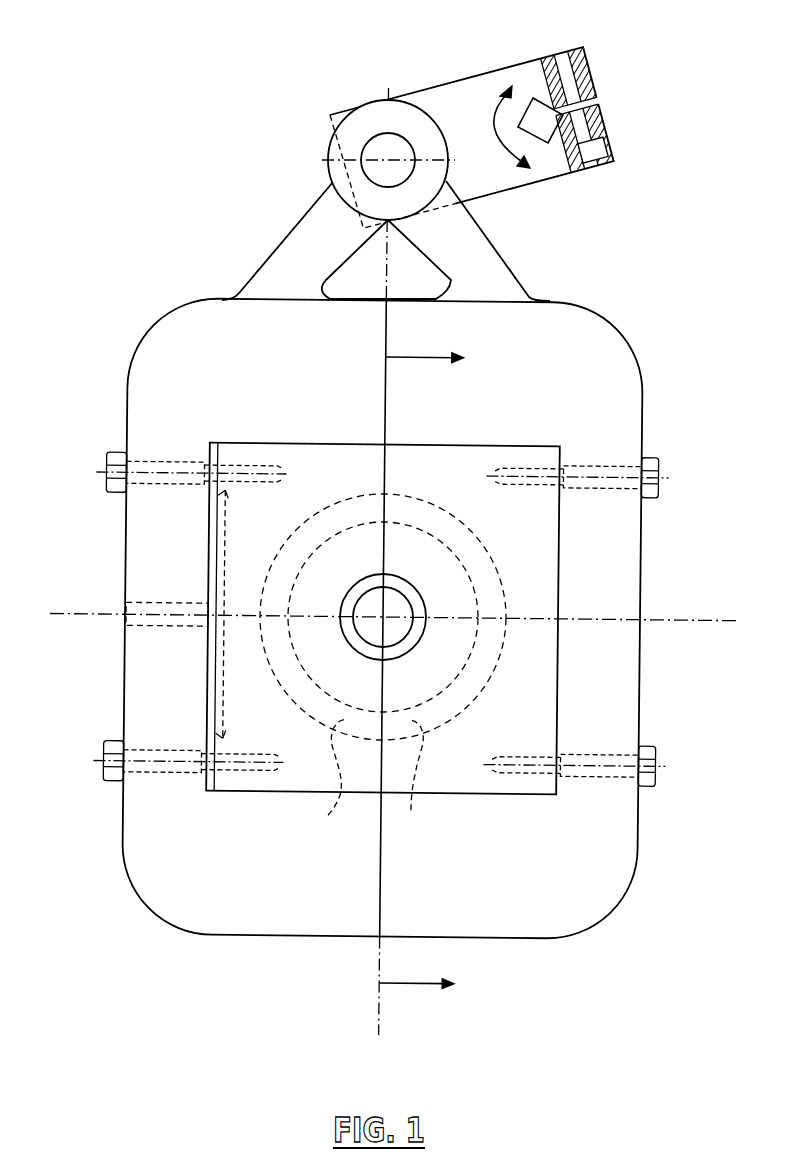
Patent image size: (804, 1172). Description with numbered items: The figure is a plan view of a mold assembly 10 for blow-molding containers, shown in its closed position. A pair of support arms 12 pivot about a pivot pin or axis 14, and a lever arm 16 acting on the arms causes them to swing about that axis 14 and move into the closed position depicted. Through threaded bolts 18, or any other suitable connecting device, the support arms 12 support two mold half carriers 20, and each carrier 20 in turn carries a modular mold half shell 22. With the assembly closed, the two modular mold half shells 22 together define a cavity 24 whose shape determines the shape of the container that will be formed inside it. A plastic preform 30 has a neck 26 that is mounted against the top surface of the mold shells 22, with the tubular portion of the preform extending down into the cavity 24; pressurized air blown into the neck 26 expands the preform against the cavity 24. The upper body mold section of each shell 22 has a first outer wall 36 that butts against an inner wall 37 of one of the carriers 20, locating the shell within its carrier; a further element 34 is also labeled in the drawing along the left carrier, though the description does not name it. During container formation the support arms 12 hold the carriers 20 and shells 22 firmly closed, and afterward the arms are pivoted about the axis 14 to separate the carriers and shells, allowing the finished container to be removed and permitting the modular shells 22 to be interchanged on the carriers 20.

The mold assembly 10 is at (384, 525).
The support arms 12 is at (167, 346).
The pivot pin or axis 14 is at (372, 144).
The lever arm 16 is at (460, 92).
The threaded bolts 18 is at (105, 468).
The mold half carriers 20 is at (249, 525).
The modular mold half shells 22 is at (377, 780).
The cavity 24 is at (447, 650).
The neck 26 is at (363, 575).
The plastic preform 30 is at (398, 603).
The strip 34 is at (225, 677).
The first outer wall 36 is at (262, 640).
The inner wall 37 is at (505, 652).